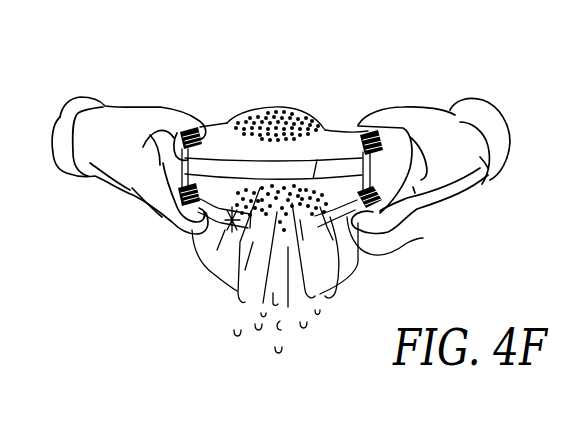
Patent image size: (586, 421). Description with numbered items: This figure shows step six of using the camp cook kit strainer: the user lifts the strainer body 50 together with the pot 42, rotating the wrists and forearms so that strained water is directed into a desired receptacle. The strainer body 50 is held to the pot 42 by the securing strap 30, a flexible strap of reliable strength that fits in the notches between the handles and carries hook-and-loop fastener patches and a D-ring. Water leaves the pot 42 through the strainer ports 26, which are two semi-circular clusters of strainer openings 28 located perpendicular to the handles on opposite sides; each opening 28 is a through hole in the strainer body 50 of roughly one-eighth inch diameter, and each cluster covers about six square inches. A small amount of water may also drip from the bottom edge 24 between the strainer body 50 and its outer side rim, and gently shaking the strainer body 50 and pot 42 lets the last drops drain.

The bottom edge 24 is at (345, 276).
The strainer port 26 is at (289, 97).
The strainer opening 28 is at (210, 257).
The securing strap 30 is at (216, 142).
The pot 42 is at (421, 238).
The strainer body 50 is at (343, 110).